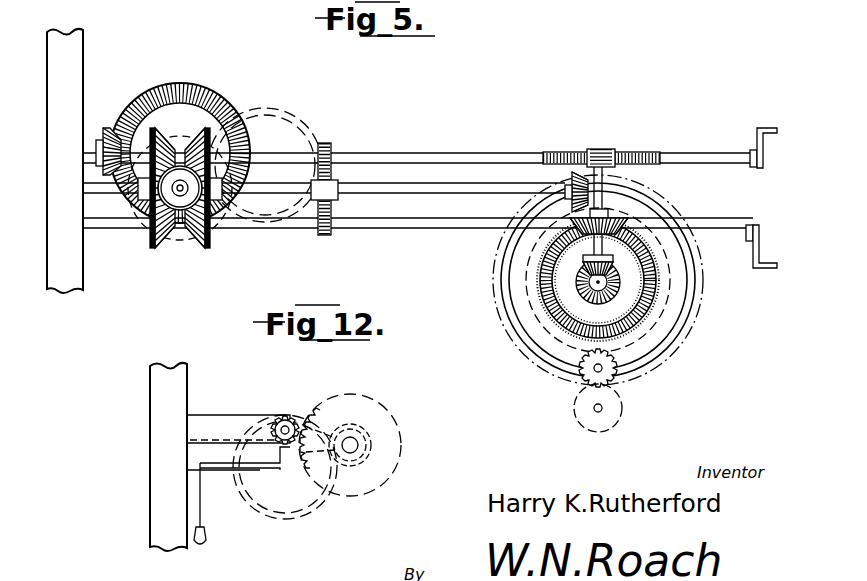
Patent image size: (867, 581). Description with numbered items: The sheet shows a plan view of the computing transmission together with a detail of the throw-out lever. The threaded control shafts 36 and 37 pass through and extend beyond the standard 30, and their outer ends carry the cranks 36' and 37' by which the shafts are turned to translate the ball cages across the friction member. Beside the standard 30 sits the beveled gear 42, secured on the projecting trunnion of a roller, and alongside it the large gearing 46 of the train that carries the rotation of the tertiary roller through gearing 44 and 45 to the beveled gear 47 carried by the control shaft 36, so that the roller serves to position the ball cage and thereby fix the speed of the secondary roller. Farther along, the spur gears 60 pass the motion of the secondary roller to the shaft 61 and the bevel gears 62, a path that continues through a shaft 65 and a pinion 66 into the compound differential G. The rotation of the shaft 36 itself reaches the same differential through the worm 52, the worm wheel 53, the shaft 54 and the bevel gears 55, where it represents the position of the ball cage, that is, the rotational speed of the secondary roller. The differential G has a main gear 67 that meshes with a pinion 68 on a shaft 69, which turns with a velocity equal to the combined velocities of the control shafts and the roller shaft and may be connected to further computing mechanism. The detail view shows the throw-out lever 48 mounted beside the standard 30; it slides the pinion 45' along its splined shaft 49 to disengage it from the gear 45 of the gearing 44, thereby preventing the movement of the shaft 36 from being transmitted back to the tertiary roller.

In FIG. 5, the standard 30 is at (62, 157).
In FIG. 12, the standard 30 is at (160, 453).
In FIG. 5, the threaded control shaft 36 is at (420, 145).
In FIG. 5, the threaded control shaft 37 is at (418, 238).
In FIG. 5, the shaft 61 is at (400, 190).
In FIG. 5, the gearing 46 is at (207, 85).
In FIG. 5, the beveled gear 47 is at (110, 130).
In FIG. 5, the beveled gear 42 is at (182, 225).
In FIG. 5, the spur gears 60 is at (330, 146).
In FIG. 5, the worm 52 is at (600, 147).
In FIG. 5, the worm wheel 53 is at (642, 160).
In FIG. 5, the bevel gears 62 is at (568, 180).
In FIG. 5, the shaft 54 is at (607, 198).
In FIG. 5, the bevel gears 55 is at (626, 222).
In FIG. 5, the crank 36' is at (773, 148).
In FIG. 5, the crank 37' is at (771, 246).
In FIG. 5, the main gear 67 is at (515, 338).
In FIG. 5, the compound differential G is at (632, 280).
In FIG. 5, the shaft 65 is at (590, 370).
In FIG. 5, the pinion 66 is at (608, 370).
In FIG. 5, the pinion 68 is at (590, 415).
In FIG. 5, the shaft 69 is at (605, 410).
In FIG. 12, the pinion 45' is at (262, 467).
In FIG. 12, the splined shaft 49 is at (290, 424).
In FIG. 12, the throw-out lever 48 is at (238, 468).
In FIG. 12, the gearing 44 is at (356, 468).
In FIG. 12, the gear 45 is at (366, 445).